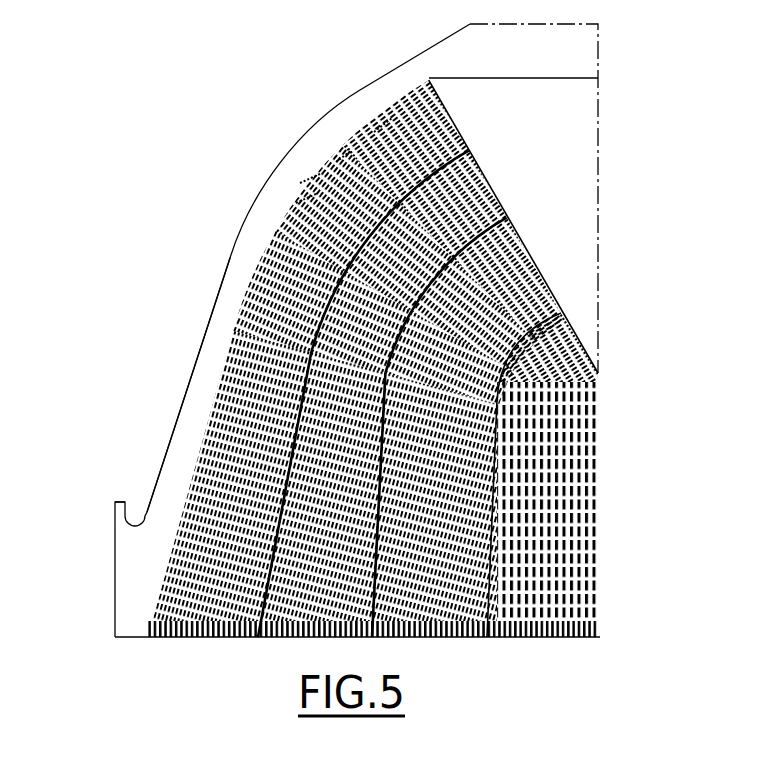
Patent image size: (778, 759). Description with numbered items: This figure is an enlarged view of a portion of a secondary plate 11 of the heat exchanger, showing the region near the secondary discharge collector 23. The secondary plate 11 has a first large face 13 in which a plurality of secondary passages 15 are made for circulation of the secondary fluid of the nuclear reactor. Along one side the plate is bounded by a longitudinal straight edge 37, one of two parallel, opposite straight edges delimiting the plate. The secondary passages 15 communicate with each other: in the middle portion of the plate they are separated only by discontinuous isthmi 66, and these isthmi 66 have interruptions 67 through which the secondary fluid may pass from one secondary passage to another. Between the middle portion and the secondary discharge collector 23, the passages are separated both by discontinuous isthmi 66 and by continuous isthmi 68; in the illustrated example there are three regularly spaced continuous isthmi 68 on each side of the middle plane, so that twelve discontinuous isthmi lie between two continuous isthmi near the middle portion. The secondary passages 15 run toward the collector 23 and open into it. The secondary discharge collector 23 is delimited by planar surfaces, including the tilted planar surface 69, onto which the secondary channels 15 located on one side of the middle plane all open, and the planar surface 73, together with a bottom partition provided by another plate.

The secondary plate 11 is at (205, 270).
The first large face 13 is at (202, 362).
The secondary passages 15 is at (477, 183).
The secondary discharge collector 23 is at (570, 168).
The longitudinal straight edge 37 is at (115, 584).
The discontinuous isthmi 66 is at (317, 177).
The interruptions 67 is at (342, 158).
The continuous isthmi 68 is at (466, 137).
The planar surface 69 is at (520, 235).
The planar surface 73 is at (543, 78).